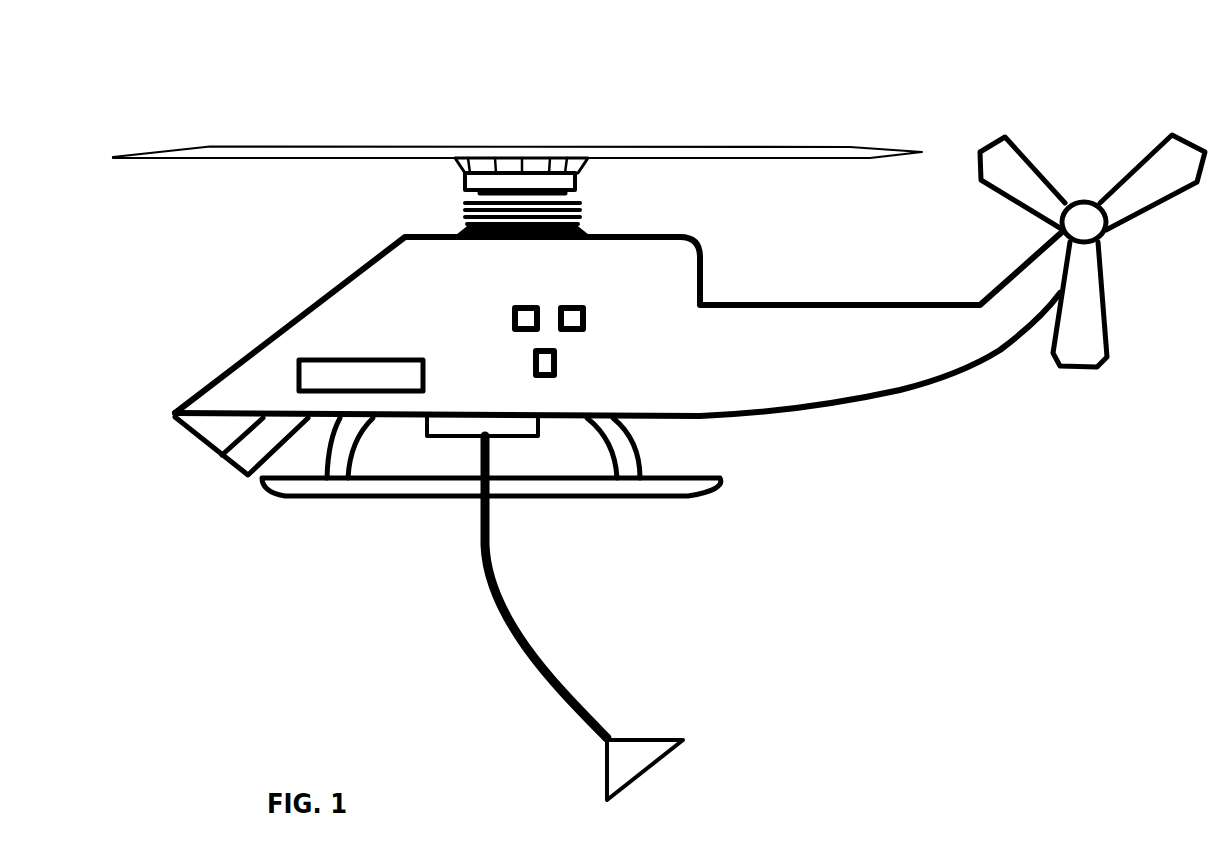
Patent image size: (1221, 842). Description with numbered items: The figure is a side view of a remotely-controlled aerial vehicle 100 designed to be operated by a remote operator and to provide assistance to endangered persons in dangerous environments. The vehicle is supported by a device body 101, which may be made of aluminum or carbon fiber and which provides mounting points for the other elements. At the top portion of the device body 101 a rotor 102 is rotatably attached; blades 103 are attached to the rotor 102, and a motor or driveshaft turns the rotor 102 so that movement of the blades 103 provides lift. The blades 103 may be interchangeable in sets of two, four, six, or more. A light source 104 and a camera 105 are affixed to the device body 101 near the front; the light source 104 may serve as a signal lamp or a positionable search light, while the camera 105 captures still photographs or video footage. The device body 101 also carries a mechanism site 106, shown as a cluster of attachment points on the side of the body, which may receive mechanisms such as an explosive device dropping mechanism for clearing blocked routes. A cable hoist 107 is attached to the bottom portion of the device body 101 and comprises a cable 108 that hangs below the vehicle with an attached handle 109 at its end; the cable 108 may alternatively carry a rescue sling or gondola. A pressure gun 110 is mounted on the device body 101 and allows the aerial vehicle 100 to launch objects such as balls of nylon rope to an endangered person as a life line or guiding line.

The remotely-controlled aerial vehicle 100 is at (218, 64).
The device body 101 is at (377, 327).
The rotor 102 is at (587, 203).
The blades 103 is at (733, 152).
The light source 104 is at (213, 437).
The camera 105 is at (247, 455).
The mechanism site 106 is at (520, 318).
The cable hoist 107 is at (530, 437).
The cable 108 is at (520, 630).
The handle 109 is at (653, 755).
The pressure gun 110 is at (343, 380).